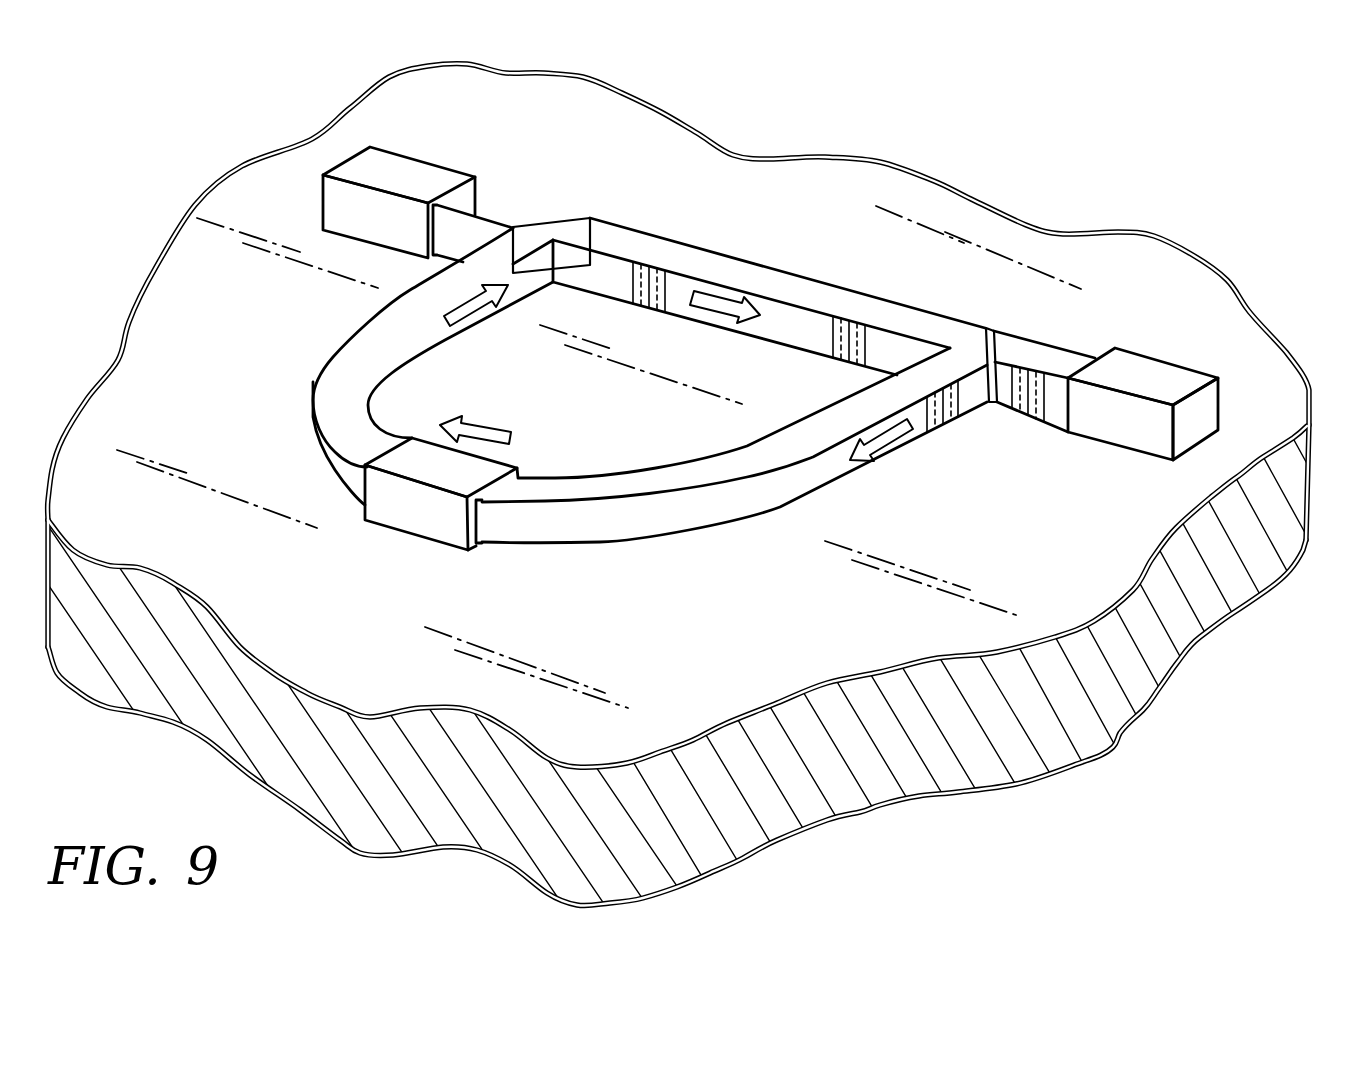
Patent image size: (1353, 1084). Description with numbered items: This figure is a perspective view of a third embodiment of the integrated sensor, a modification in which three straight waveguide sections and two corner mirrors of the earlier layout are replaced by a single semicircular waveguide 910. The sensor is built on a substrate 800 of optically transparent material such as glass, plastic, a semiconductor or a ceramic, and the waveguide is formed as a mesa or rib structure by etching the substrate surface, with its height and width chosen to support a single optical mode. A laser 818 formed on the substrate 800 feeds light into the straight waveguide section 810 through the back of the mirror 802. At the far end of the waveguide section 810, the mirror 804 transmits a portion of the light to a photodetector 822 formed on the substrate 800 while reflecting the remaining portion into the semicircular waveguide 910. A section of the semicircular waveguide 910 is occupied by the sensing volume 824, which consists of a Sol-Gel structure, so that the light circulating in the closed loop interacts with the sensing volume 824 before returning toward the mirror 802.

The substrate 800 is at (878, 775).
The mirror 802 is at (582, 233).
The mirror 804 is at (983, 340).
The waveguide section 810 is at (722, 267).
The laser 818 is at (404, 170).
The photodetector 822 is at (1148, 372).
The sensing volume 824 is at (404, 512).
The semicircular waveguide 910 is at (308, 337).